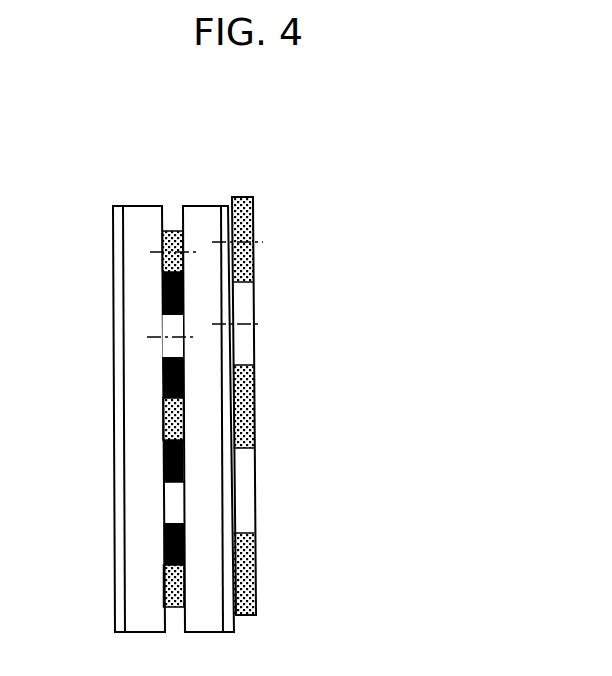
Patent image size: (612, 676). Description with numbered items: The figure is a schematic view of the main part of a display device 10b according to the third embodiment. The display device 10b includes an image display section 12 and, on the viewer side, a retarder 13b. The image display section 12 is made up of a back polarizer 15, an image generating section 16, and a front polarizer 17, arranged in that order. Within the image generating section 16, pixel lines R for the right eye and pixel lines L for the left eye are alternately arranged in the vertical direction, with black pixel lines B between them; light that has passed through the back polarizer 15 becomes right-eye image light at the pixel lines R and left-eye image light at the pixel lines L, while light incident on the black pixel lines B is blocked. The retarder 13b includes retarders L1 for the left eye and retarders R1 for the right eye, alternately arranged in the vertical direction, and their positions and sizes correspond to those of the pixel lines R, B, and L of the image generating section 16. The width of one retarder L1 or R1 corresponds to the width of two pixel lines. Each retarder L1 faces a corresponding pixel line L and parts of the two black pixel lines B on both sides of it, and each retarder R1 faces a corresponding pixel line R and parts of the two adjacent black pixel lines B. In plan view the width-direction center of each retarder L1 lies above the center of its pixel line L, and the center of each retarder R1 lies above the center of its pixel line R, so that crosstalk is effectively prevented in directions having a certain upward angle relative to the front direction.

The display device 10b is at (340, 126).
The image display section 12 is at (205, 145).
The retarder 13b is at (240, 197).
The back polarizer 15 is at (118, 212).
The image generating section 16 is at (225, 196).
The front polarizer 17 is at (226, 206).
The pixel lines for the left eye L is at (170, 259).
The black pixel lines B is at (170, 300).
The pixel lines for the right eye R is at (166, 345).
The retarders for the left eye L1 is at (245, 258).
The retarders for the right eye R1 is at (245, 355).